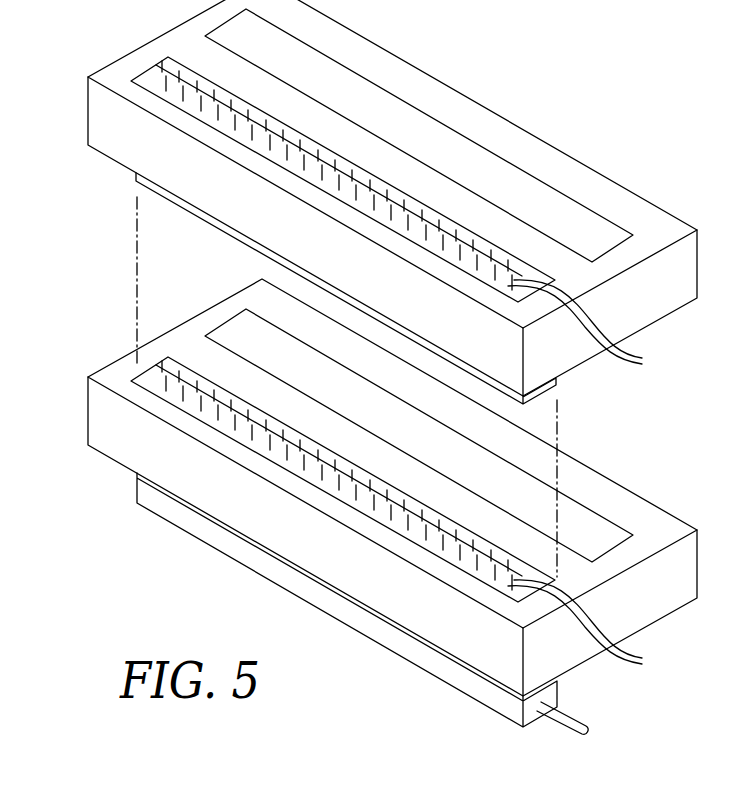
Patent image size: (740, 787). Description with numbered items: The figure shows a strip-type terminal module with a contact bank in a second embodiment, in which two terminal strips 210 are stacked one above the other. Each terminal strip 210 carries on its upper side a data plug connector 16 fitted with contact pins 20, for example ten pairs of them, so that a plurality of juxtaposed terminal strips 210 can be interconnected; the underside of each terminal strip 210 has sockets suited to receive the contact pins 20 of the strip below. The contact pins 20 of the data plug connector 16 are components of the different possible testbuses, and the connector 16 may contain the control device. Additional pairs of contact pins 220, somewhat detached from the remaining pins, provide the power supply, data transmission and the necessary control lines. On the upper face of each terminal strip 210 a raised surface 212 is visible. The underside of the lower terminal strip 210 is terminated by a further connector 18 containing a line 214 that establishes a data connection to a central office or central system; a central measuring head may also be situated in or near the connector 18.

The data plug connector 16 is at (146, 82).
The connector 18 is at (163, 506).
The contact pins 20 is at (180, 68).
The terminal strip 210 is at (97, 118).
The raised top surface 212 is at (355, 86).
The line 214 is at (580, 718).
The additional pairs of contact pins 220 is at (597, 478).